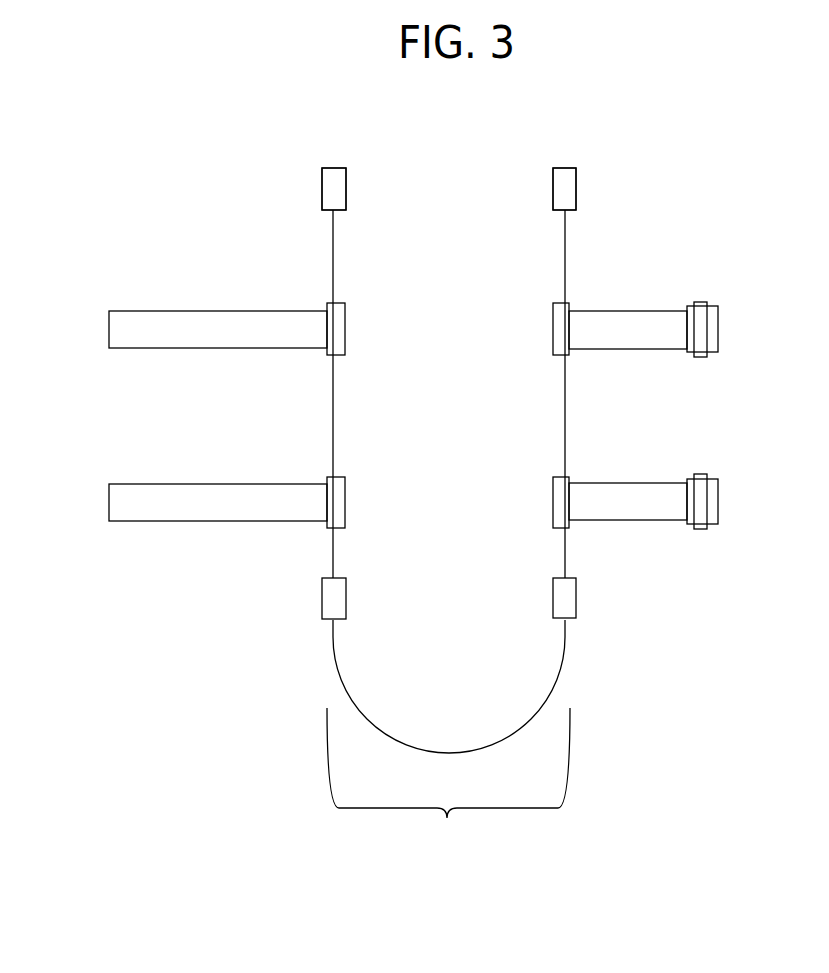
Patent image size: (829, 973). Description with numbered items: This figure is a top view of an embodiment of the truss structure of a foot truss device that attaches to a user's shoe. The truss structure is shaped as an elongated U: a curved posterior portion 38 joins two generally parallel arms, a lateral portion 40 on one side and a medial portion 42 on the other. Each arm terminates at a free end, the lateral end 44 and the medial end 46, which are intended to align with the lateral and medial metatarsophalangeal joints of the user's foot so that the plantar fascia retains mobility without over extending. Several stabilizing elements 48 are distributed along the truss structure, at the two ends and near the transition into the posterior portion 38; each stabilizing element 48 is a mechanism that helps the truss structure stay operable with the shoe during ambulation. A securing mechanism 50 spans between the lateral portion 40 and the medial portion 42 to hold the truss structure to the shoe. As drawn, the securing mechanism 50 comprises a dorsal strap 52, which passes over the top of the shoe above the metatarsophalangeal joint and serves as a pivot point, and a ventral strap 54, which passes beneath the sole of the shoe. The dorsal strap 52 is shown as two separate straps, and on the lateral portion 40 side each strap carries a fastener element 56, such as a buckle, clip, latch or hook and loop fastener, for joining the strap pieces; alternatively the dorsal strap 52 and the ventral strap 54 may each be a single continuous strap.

The posterior portion 38 is at (448, 735).
The lateral portion 40 is at (538, 287).
The medial portion 42 is at (358, 287).
The lateral end 44 is at (538, 155).
The medial end 46 is at (358, 155).
The stabilizing element 48 is at (332, 187).
The securing mechanism 50 is at (183, 396).
The dorsal strap 52 is at (197, 328).
The ventral strap 54 is at (218, 475).
The fastener element 56 is at (700, 305).